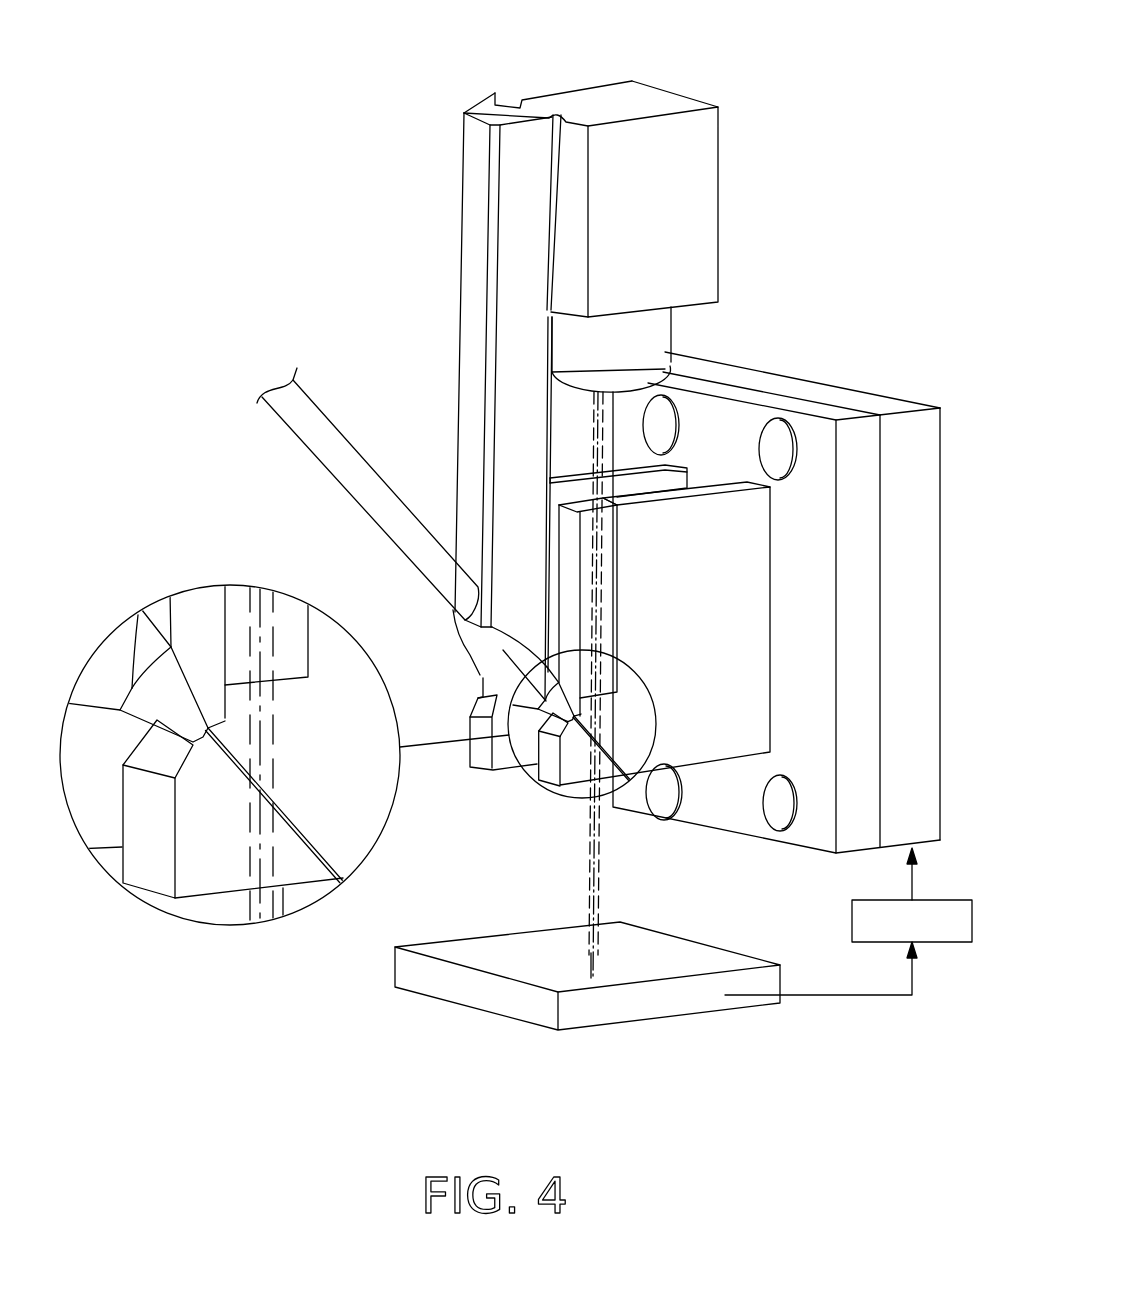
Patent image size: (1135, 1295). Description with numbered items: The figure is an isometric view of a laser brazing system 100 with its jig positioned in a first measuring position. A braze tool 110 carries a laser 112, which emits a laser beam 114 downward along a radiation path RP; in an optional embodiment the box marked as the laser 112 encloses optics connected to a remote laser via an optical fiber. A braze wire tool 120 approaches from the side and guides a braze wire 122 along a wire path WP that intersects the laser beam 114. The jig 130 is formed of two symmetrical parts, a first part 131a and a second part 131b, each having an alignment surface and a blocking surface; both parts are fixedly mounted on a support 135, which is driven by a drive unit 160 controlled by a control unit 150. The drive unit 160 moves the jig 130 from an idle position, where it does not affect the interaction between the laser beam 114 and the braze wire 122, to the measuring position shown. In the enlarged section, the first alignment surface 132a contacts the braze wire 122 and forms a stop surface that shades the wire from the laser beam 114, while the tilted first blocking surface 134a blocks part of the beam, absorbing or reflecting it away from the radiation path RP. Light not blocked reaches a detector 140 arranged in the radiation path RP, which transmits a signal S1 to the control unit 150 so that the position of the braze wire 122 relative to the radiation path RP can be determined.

The laser brazing system 100 is at (790, 132).
The braze tool 110 is at (610, 100).
The laser 112 is at (607, 344).
The laser beam 114 is at (585, 848).
The braze wire tool 120 is at (312, 428).
The braze wire 122 is at (576, 745).
The jig 130 is at (737, 652).
The first part 131a is at (697, 617).
The second part 131b is at (648, 487).
The first alignment surface 132a is at (562, 736).
The first blocking surface 134a is at (626, 626).
The support 135 is at (855, 463).
The detector 140 is at (470, 983).
The control unit 150 is at (873, 943).
The drive unit 160 is at (903, 460).
The radiation path RP is at (587, 967).
The wire path WP is at (637, 790).
The signal S1 is at (800, 996).